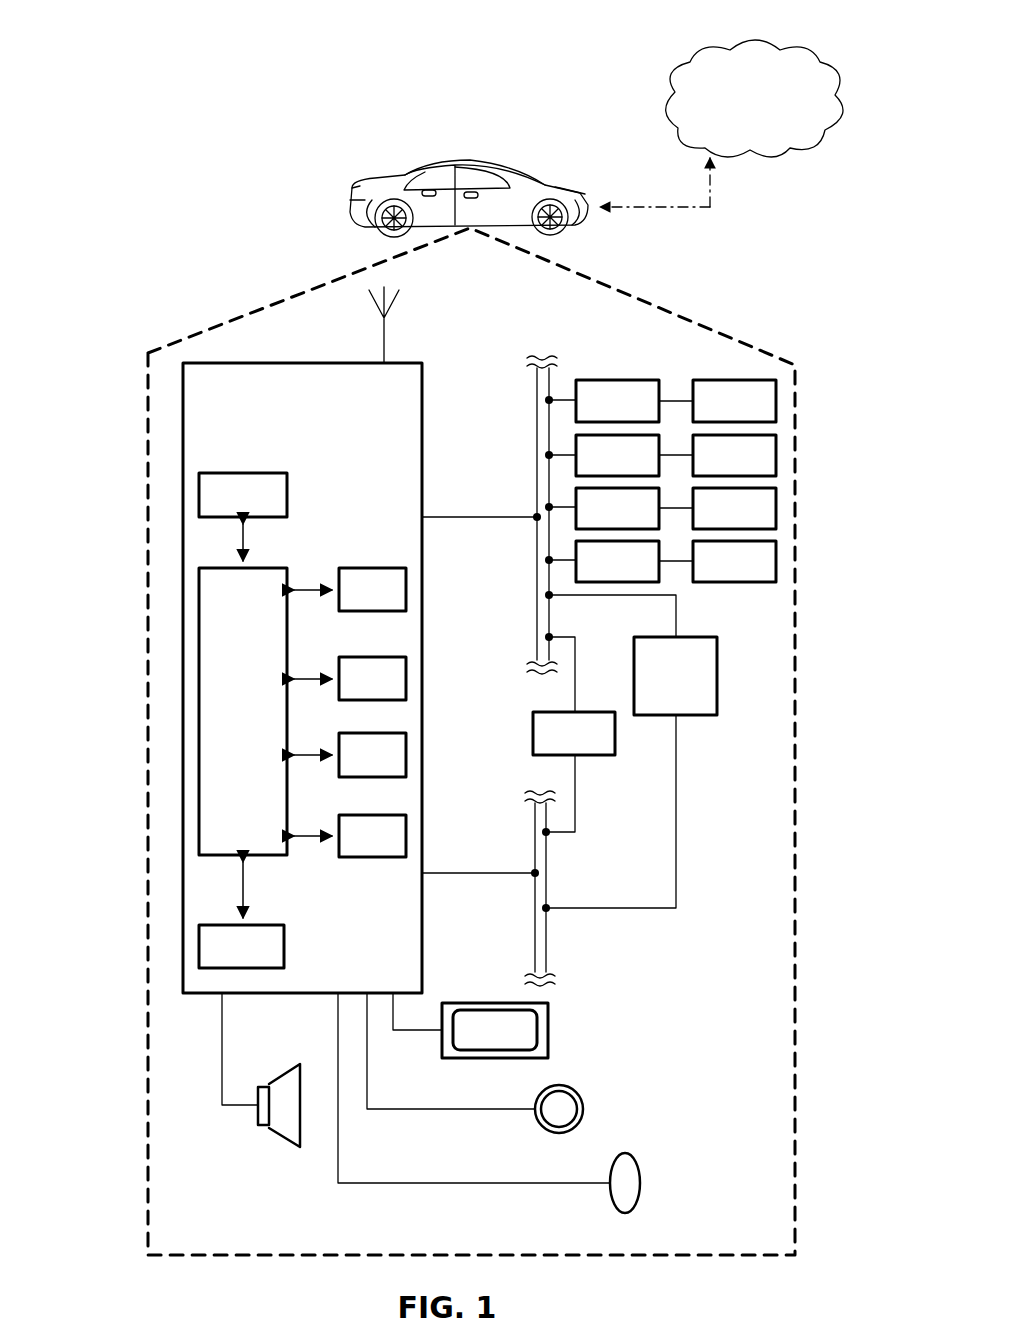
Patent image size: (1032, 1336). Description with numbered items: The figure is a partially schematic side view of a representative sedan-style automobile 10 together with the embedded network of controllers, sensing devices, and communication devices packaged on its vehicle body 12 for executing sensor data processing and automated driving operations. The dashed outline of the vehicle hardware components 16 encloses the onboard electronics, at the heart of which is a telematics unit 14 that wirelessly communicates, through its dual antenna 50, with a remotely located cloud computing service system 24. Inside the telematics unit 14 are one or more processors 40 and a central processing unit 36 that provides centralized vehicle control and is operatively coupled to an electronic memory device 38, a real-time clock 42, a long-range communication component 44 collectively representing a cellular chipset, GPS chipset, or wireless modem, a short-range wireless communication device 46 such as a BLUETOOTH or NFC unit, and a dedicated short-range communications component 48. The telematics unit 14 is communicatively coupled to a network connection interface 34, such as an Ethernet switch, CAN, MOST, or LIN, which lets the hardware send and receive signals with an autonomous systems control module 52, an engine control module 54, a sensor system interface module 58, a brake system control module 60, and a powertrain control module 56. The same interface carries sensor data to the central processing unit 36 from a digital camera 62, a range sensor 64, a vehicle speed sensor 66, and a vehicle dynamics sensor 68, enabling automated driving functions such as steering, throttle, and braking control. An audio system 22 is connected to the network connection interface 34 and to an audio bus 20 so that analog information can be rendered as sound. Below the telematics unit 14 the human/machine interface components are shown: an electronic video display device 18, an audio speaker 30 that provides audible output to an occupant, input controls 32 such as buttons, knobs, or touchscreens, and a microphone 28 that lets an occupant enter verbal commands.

The automobile 10 is at (196, 50).
The vehicle body 12 is at (378, 180).
The telematics unit 14 is at (424, 553).
The vehicle hardware components 16 is at (293, 296).
The electronic video display device 18 is at (470, 1025).
The audio bus 20 is at (534, 915).
The audio system 22 is at (631, 751).
The cloud computing service system 24 is at (721, 123).
The microphone 28 is at (640, 1165).
The audio speaker 30 is at (282, 1135).
The input controls 32 is at (584, 1098).
The network connection interface 34 is at (537, 588).
The central processing unit 36 is at (243, 711).
The electronic memory device 38 is at (241, 946).
The processor 40 is at (243, 495).
The real-time clock 42 is at (372, 589).
The long-range communication component 44 is at (372, 678).
The short-range wireless communication device 46 is at (372, 755).
The dedicated short-range communications component 48 is at (372, 836).
The dual antenna 50 is at (386, 340).
The autonomous systems control module 52 is at (617, 401).
The engine control module 54 is at (734, 401).
The powertrain control module 56 is at (574, 734).
The sensor system interface module 58 is at (617, 455).
The brake system control module 60 is at (734, 455).
The digital camera 62 is at (617, 508).
The range sensor 64 is at (734, 508).
The vehicle speed sensor 66 is at (617, 561).
The vehicle dynamics sensor 68 is at (734, 561).